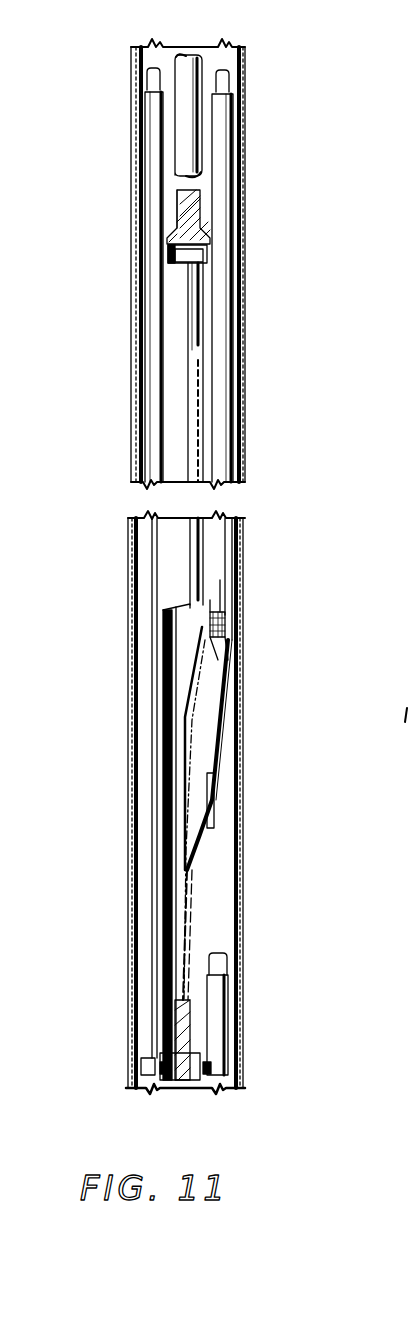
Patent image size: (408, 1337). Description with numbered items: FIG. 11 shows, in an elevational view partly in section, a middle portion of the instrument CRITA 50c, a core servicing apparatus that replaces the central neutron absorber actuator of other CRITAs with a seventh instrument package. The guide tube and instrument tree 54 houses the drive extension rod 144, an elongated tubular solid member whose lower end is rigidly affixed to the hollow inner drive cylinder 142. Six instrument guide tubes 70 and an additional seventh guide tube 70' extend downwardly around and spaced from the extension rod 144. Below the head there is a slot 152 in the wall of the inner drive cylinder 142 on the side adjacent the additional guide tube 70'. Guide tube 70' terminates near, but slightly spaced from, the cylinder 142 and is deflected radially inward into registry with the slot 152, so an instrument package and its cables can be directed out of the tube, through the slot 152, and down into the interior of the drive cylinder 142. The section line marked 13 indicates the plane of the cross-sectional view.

The instrument CRITA 50c is at (272, 98).
The guide tube and instrument tree 54 is at (250, 270).
The instrument guide tube 70 is at (118, 275).
The additional instrument guide tube 70' is at (255, 276).
The drive extension rod 144 is at (189, 70).
The inner drive cylinder 142 is at (196, 355).
The slot 152 is at (186, 758).
The section line 13- 13 is at (180, 620).